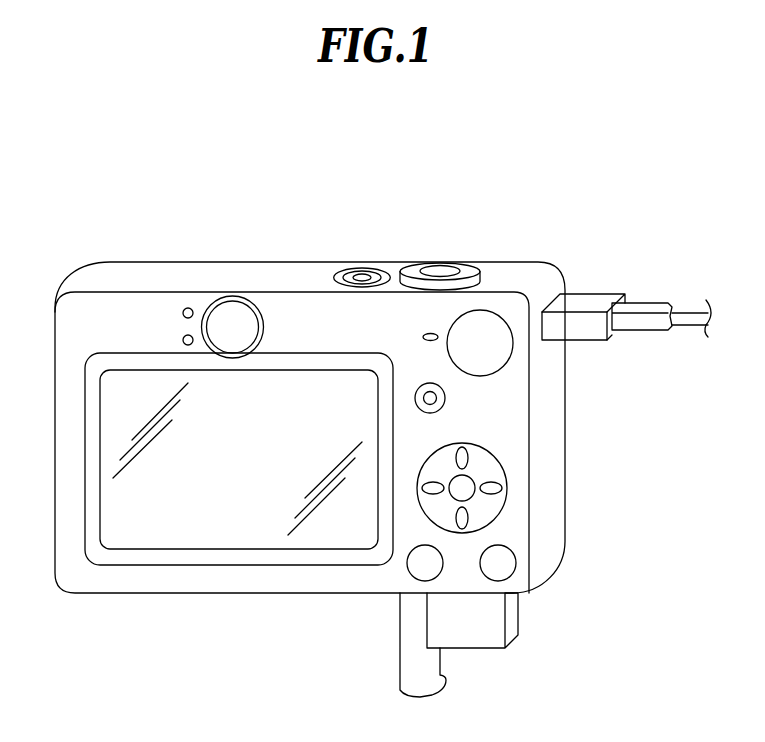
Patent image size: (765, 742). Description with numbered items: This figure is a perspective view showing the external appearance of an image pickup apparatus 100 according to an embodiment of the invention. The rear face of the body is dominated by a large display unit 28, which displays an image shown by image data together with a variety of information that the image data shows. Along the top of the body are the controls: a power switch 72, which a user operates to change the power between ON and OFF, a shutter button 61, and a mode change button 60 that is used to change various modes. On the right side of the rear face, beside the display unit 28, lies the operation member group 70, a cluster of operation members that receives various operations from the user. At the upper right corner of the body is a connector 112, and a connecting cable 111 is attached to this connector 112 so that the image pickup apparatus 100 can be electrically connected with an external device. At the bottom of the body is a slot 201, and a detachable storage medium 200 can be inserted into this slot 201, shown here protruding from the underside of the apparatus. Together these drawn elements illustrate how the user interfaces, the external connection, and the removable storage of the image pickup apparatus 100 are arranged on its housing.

The image pickup apparatus 100 is at (28, 145).
The display unit 28 is at (142, 383).
The power switch 72 is at (365, 278).
The shutter button 61 is at (443, 263).
The mode change button 60 is at (487, 325).
The connector 112 is at (563, 292).
The connecting cable 111 is at (645, 305).
The operation member group 70 is at (435, 285).
The storage medium 200 is at (478, 633).
The slot 201 is at (448, 600).